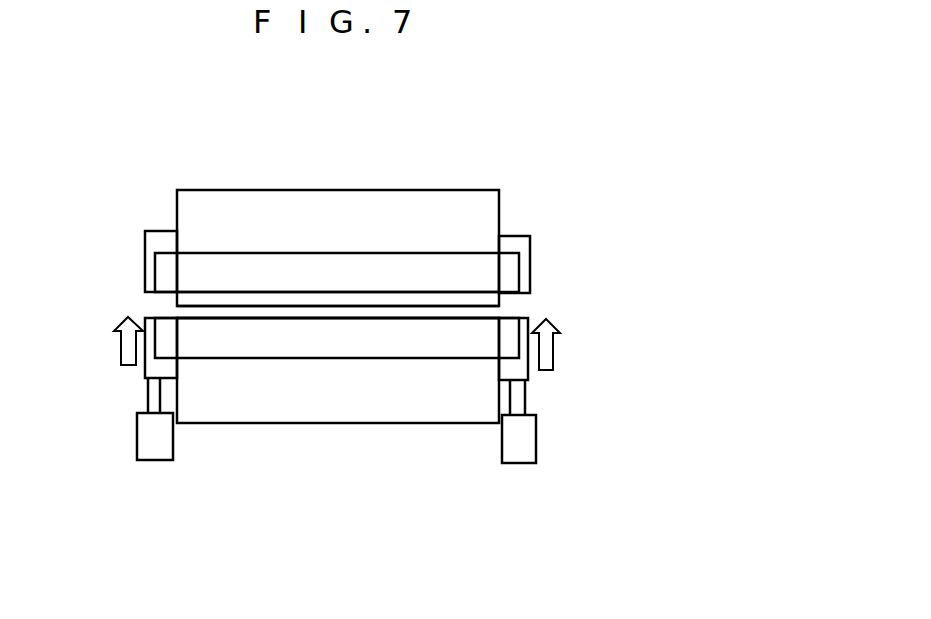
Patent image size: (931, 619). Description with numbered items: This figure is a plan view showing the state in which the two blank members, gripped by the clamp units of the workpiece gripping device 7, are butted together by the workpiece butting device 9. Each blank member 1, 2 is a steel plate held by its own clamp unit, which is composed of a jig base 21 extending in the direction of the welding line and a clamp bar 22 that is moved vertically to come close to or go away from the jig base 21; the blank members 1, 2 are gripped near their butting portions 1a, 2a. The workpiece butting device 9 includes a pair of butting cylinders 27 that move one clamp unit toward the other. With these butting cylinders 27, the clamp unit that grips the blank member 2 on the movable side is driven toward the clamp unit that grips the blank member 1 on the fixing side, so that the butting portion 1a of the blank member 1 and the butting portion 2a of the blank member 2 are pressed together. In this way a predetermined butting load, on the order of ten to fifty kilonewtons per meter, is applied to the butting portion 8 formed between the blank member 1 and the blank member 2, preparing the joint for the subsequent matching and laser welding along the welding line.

The blank member 1 is at (379, 205).
The butting portion 1a is at (276, 306).
The blank member 2 is at (417, 408).
The butting portion 2a is at (353, 297).
The workpiece gripping device 7 is at (553, 251).
The butting portion 8 is at (525, 313).
The workpiece butting device 9 is at (557, 425).
The jig base 21 is at (146, 246).
The clamp bar 22 is at (457, 270).
The butting cylinder 27 is at (147, 440).